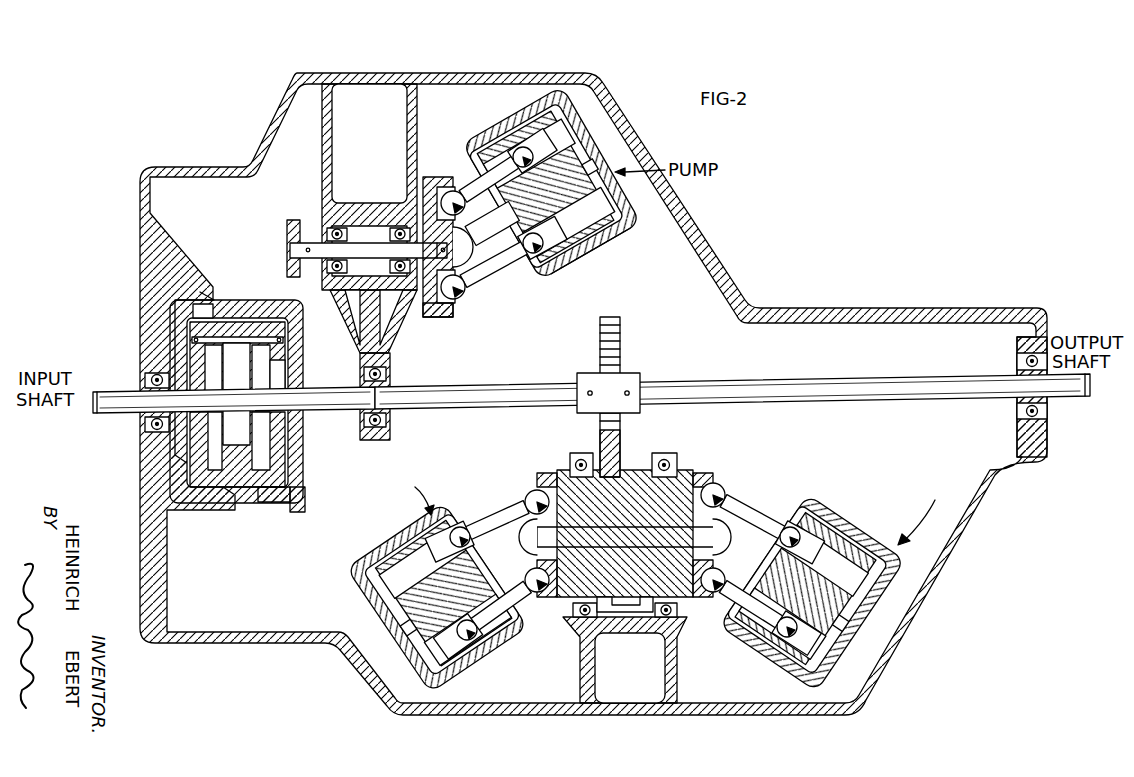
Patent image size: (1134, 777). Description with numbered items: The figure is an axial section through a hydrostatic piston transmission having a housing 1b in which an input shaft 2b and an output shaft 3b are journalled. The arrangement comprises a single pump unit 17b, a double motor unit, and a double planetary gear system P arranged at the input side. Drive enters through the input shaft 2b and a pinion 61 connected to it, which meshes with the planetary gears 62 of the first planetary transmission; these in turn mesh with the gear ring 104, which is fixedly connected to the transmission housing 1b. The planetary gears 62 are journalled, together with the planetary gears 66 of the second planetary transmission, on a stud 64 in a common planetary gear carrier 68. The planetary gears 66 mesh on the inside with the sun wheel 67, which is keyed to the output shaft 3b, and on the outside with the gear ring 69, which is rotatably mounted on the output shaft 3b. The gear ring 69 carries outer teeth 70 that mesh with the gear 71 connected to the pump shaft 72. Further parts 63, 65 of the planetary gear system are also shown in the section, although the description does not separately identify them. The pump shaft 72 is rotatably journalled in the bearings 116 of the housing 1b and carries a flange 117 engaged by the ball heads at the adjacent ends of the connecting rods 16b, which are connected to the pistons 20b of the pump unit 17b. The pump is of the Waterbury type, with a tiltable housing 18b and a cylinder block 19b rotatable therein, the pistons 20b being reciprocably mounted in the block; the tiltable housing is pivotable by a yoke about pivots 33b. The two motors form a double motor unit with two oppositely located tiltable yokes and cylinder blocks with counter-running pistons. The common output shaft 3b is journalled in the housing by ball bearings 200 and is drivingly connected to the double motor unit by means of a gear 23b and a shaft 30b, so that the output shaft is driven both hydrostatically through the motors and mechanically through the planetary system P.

The housing 1b is at (484, 72).
The input shaft 2b is at (118, 392).
The output shaft 3b is at (762, 380).
The connecting rods 16b is at (448, 185).
The pump unit 17b is at (572, 270).
The tiltable housing 18b is at (600, 170).
The cylinder block 19b is at (560, 95).
The pistons 20b is at (518, 147).
The gear 23b is at (620, 350).
The shaft 30b is at (630, 490).
The pivots 33b is at (540, 262).
The pinion 61 is at (236, 402).
The planetary gears 62 is at (240, 322).
The clutch plate 63 is at (190, 362).
The stud 64 is at (240, 345).
The clutch lower member 65 is at (282, 433).
The planetary gears 66 is at (270, 362).
The sun wheel 67 is at (300, 367).
The planetary gear carrier 68 is at (248, 300).
The gear ring 69 is at (280, 503).
The outer teeth 70 is at (305, 512).
The gear 71 is at (287, 240).
The pump shaft 72 is at (365, 243).
The gear ring 104 is at (210, 304).
The bearings 116 is at (327, 232).
The flange 117 is at (432, 318).
The ball bearings 200 is at (393, 434).
The double planetary gear system P is at (212, 290).